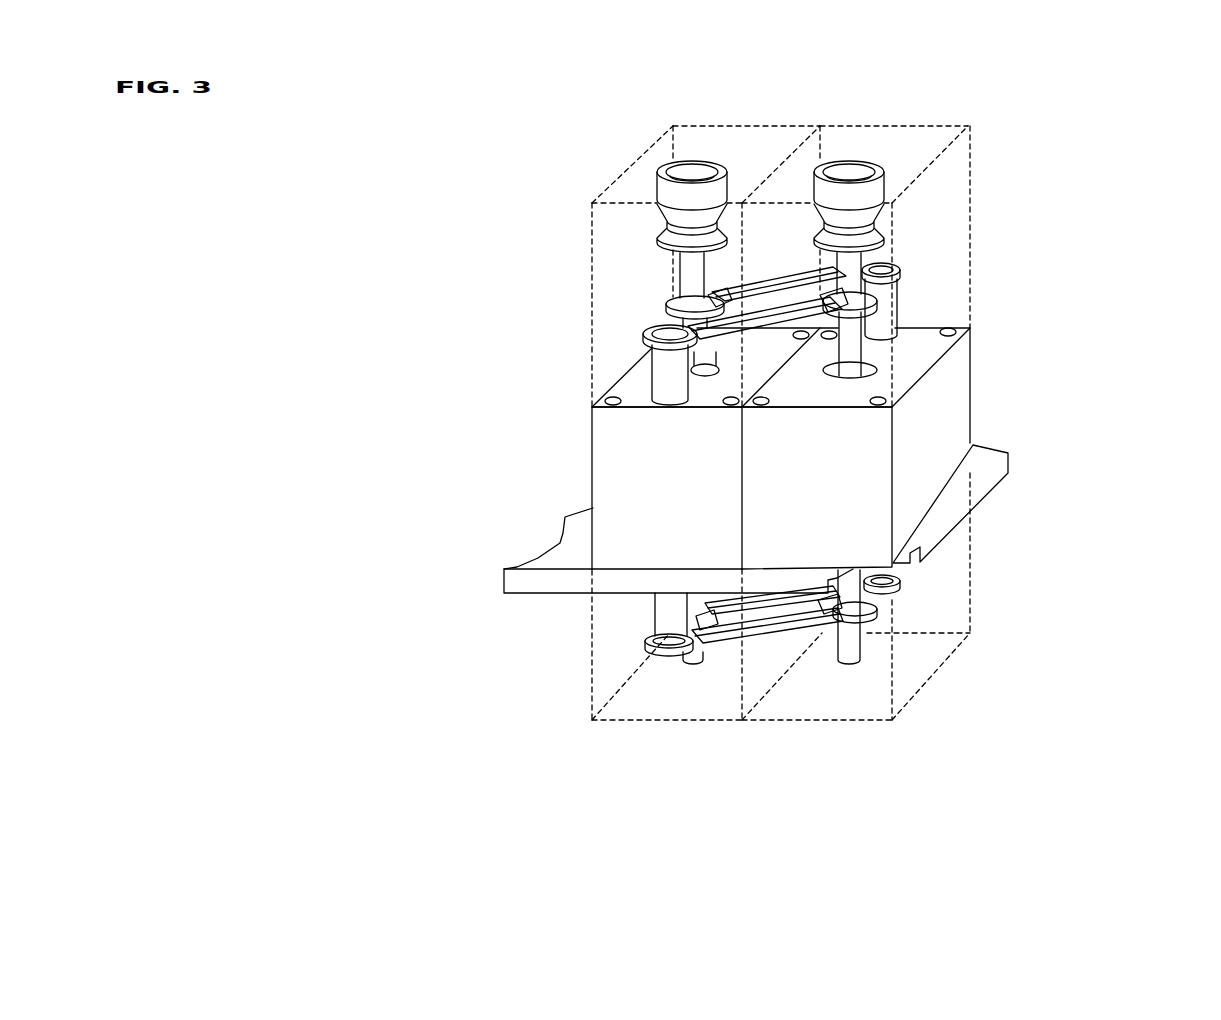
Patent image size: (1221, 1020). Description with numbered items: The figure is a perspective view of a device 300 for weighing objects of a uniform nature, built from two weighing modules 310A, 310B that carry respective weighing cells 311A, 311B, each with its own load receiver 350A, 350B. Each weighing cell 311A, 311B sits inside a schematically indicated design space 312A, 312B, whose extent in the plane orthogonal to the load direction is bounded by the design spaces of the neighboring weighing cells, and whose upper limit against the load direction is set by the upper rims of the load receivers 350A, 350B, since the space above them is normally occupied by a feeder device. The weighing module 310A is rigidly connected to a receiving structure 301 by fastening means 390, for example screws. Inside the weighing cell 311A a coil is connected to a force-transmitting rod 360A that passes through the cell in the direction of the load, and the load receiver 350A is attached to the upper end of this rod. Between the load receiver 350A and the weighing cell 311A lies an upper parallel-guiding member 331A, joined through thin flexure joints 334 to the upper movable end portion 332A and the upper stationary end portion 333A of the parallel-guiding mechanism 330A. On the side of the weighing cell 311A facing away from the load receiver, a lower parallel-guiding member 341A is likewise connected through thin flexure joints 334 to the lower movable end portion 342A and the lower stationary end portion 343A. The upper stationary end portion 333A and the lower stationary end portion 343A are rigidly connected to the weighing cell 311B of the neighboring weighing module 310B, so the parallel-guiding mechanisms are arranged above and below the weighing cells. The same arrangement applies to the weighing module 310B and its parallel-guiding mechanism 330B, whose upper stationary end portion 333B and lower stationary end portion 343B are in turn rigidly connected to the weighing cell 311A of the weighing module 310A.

The device 300 is at (1022, 182).
The receiving structure 301 is at (583, 540).
The weighing module 310A is at (974, 448).
The weighing module 310B is at (516, 458).
The weighing cell 311A is at (927, 463).
The weighing cell 311B is at (658, 470).
The design space 312A is at (952, 170).
The design space 312B is at (608, 233).
The parallel-guiding mechanism 330A is at (778, 702).
The parallel-guiding mechanism 330B is at (768, 187).
The upper parallel-guiding member 331A is at (782, 312).
The upper movable end portion 332A is at (868, 302).
The upper stationary end portion 333A is at (670, 377).
The upper stationary end portion 333B is at (883, 290).
The thin flexure joints 334 is at (843, 348).
The lower parallel-guiding member 341A is at (760, 627).
The lower movable end portion 342A is at (877, 618).
The lower stationary end portion 343A is at (668, 623).
The lower stationary end portion 343B is at (867, 578).
The load receiver 350A is at (848, 192).
The load receiver 350B is at (688, 192).
The force-transmitting rod 360A is at (1021, 371).
The fastening means 390 is at (892, 339).